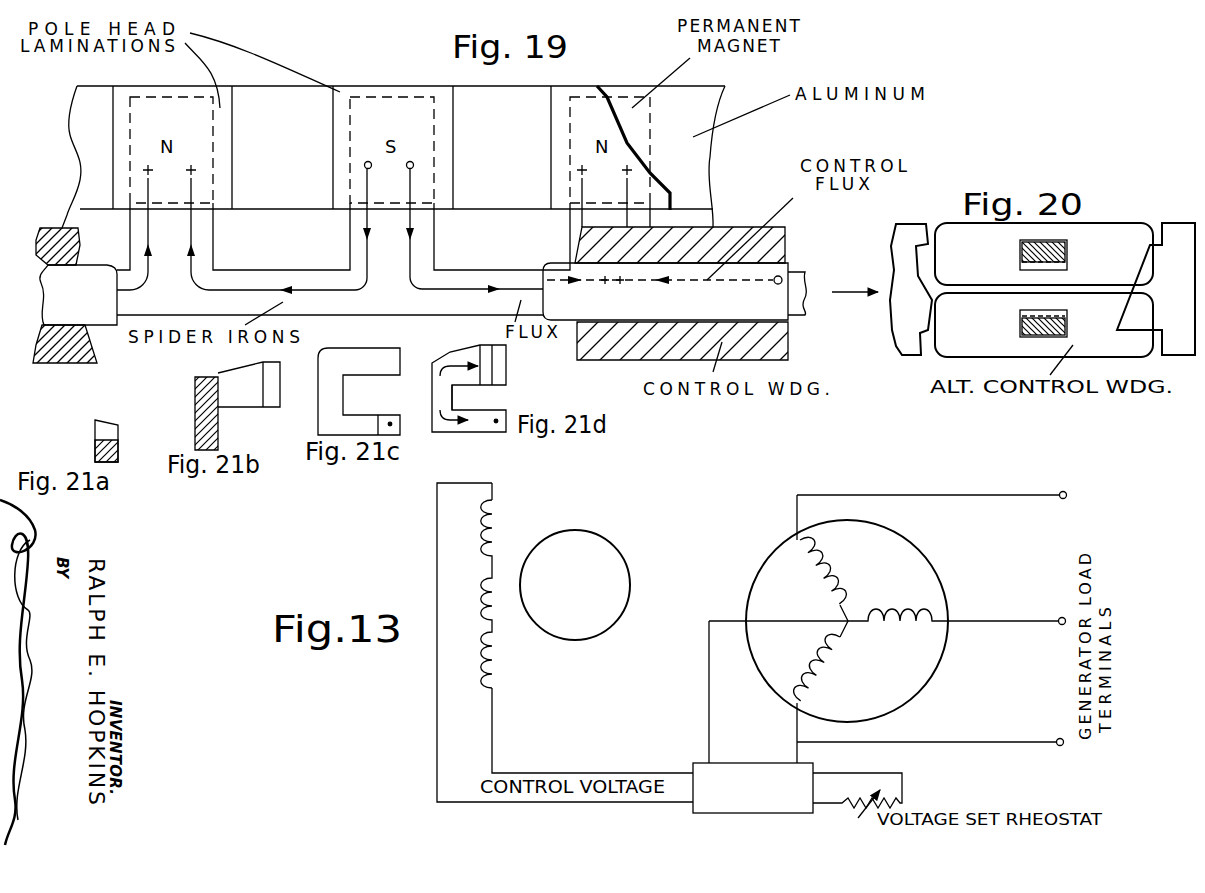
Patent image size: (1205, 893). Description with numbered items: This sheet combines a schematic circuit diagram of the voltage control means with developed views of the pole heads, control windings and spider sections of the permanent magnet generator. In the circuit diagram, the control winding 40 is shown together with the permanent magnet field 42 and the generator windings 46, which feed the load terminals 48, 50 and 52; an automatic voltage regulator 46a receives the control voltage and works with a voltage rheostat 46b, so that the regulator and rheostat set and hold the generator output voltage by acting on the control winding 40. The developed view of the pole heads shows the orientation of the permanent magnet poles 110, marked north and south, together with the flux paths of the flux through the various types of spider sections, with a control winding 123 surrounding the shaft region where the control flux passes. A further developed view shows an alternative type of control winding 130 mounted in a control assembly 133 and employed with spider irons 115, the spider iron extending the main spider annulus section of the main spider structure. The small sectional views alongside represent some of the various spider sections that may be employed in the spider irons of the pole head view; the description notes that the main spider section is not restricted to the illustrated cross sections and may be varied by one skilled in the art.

In FIG. 19, the permanent magnet poles 110 is at (551, 108).
In FIG. 19, the control winding 123 is at (615, 347).
In FIG. 20, the control assembly 133 is at (1104, 223).
In FIG. 20, the control winding 130 is at (940, 350).
In FIG. 20, the spider irons 115 is at (1066, 321).
In FIG. 13, the control winding 40 is at (492, 492).
In FIG. 13, the permanent magnet field 42 is at (631, 582).
In FIG. 13, the generator windings 46 is at (768, 564).
In FIG. 13, the automatic voltage regulator 46a is at (727, 763).
In FIG. 13, the voltage rheostat 46b is at (903, 795).
In FIG. 13, the load terminal 48 is at (988, 494).
In FIG. 13, the load terminal 50 is at (1001, 622).
In FIG. 13, the load terminal 52 is at (956, 726).